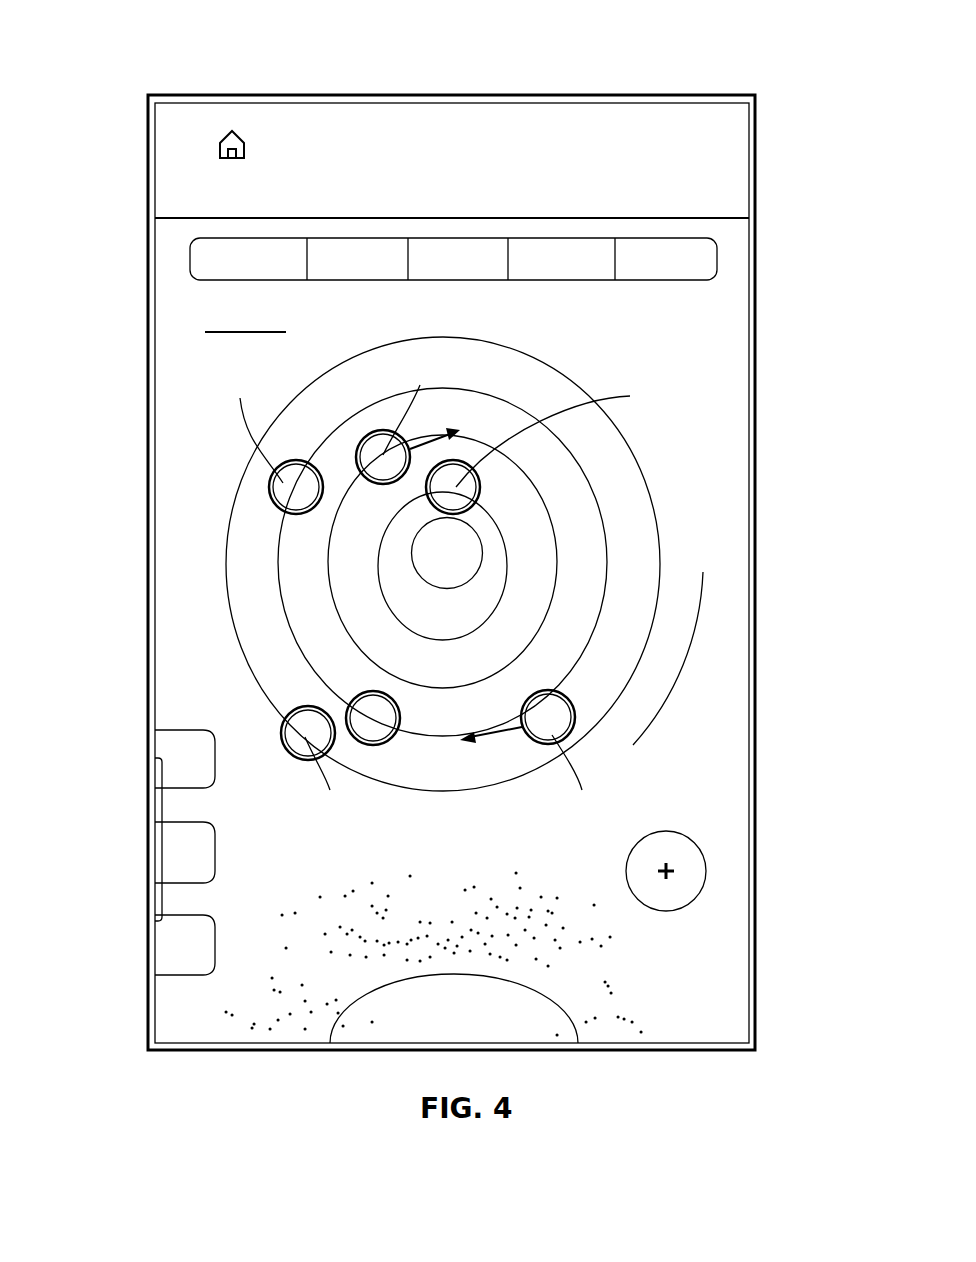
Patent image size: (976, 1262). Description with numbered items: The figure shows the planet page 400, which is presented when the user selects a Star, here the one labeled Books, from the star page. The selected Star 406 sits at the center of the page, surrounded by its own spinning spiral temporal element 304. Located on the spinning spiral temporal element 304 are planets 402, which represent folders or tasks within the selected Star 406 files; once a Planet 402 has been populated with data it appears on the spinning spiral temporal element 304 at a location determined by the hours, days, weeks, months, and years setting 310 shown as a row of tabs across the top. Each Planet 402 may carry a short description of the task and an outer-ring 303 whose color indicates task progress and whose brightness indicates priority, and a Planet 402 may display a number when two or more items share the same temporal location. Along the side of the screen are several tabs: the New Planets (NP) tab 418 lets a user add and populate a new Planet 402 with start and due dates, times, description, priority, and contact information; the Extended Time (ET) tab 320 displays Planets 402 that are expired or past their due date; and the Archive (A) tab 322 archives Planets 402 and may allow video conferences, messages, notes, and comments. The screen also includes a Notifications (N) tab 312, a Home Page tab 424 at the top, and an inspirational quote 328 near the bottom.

The planet page 400 is at (106, 26).
The Home Page tab 424 is at (218, 148).
The hours, days, weeks, months, and years setting 310 is at (710, 265).
The outer-ring 303 is at (275, 492).
The planets 402 is at (284, 482).
The selected Star 406 is at (470, 553).
The spinning spiral temporal element 304 is at (633, 720).
The New Planets (NP) tab 418 is at (157, 775).
The Extended Time (ET) tab 320 is at (157, 870).
The Archive (A) tab 322 is at (167, 940).
The Notifications (N) tab 312 is at (690, 905).
The inspirational quote 328 is at (558, 1018).